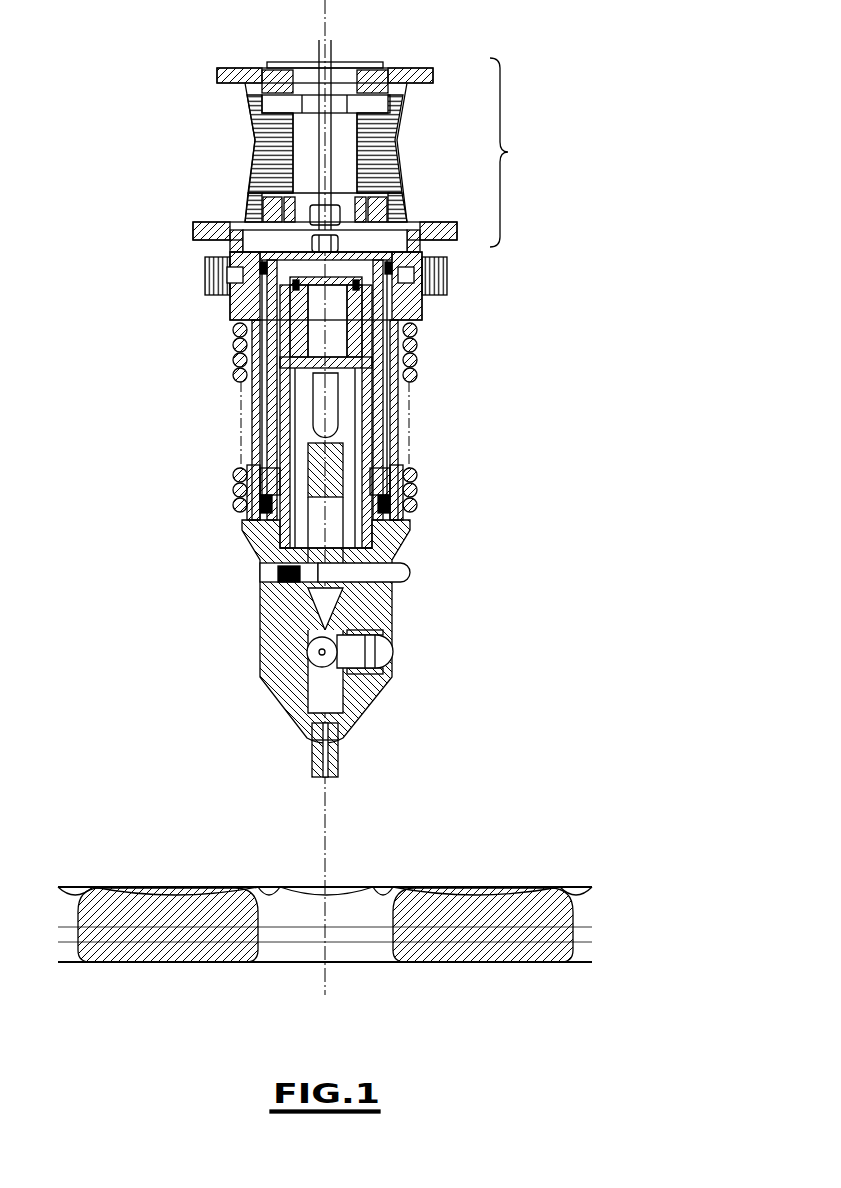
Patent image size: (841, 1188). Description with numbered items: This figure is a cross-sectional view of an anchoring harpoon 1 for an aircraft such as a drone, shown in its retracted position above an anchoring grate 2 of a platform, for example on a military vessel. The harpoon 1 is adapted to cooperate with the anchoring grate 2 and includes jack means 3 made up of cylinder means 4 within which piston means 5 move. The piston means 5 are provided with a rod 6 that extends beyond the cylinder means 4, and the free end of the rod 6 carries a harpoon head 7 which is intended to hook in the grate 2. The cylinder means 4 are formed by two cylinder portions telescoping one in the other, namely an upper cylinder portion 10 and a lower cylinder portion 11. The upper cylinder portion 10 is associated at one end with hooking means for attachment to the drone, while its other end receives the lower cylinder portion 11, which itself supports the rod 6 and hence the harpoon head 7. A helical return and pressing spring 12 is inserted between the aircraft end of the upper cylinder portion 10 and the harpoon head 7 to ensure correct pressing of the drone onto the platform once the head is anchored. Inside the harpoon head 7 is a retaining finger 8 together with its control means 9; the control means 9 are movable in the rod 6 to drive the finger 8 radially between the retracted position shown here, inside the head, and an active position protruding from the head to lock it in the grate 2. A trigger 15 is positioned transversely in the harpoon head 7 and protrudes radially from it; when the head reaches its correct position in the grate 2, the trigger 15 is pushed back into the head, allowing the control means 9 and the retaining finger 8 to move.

The anchoring harpoon 1 is at (150, 311).
The anchoring grate 2 is at (152, 985).
The jack means 3 is at (215, 496).
The cylinder means 4 is at (240, 408).
The piston means 5 is at (395, 405).
The rod 6 is at (255, 530).
The harpoon head 7 is at (253, 694).
The finger 8 is at (412, 666).
The control means 9 is at (282, 606).
The upper cylinder portion 10 is at (430, 310).
The lower cylinder portion 11 is at (420, 357).
The helical return and pressing spring 12 is at (440, 485).
The trigger 15 is at (430, 572).